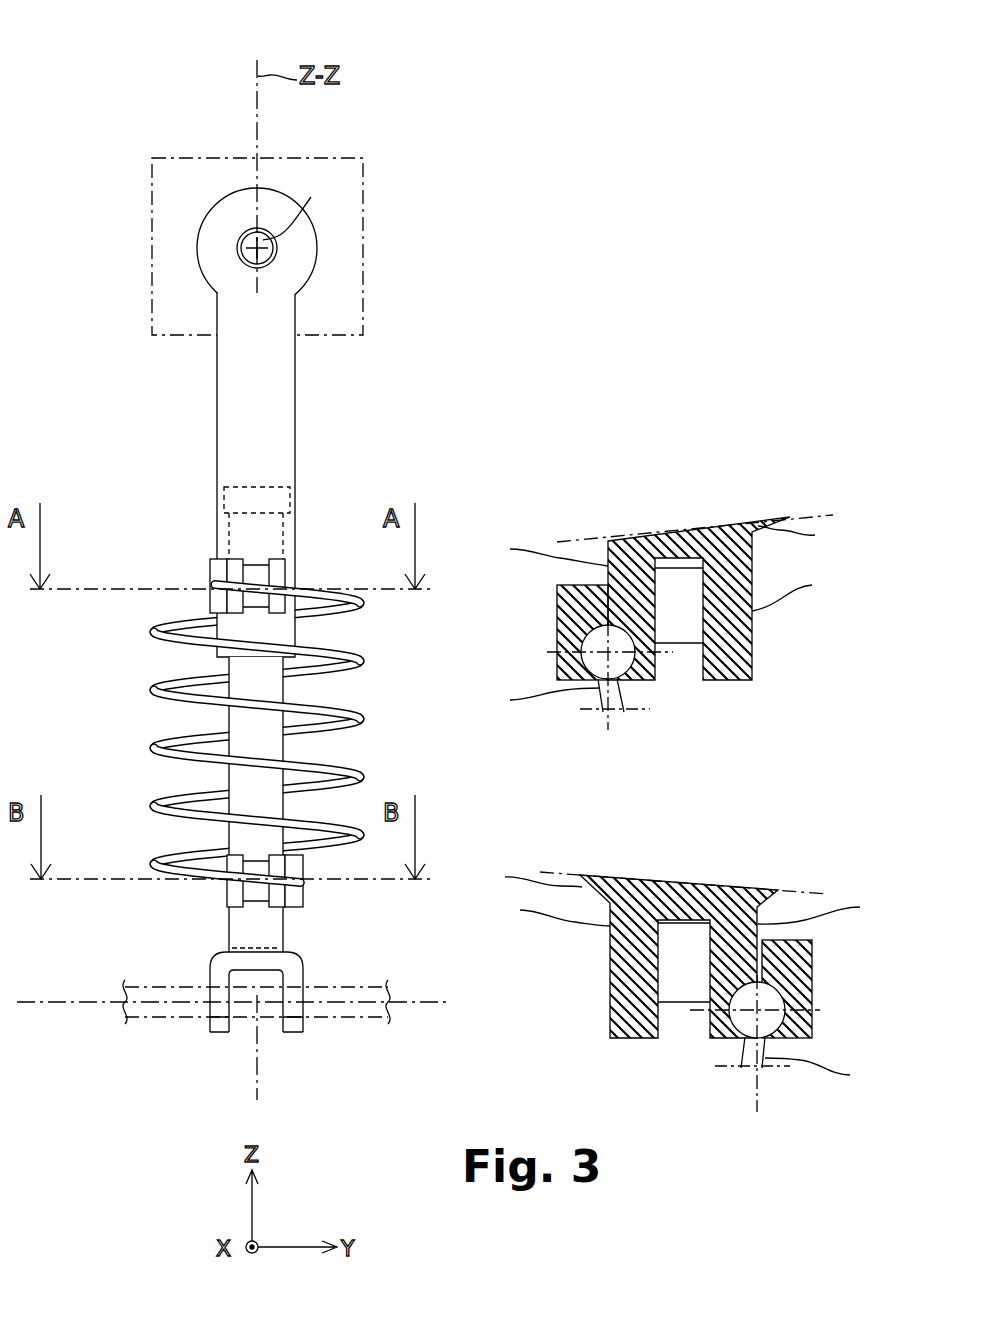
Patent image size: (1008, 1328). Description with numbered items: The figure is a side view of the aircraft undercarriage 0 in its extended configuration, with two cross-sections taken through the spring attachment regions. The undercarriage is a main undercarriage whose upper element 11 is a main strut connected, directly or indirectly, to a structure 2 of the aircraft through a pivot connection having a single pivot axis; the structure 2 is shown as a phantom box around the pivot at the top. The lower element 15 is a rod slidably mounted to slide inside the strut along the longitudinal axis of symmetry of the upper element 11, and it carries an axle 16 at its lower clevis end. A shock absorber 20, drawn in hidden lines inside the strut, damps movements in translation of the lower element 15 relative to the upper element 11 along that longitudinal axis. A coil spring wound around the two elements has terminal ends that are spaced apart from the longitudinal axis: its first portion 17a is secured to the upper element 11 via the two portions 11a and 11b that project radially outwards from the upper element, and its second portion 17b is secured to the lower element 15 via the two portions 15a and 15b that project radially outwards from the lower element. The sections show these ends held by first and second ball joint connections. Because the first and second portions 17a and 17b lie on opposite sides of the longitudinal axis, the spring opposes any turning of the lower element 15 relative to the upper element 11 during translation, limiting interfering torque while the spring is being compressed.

The aircraft undercarriage 0 is at (144, 90).
The structure 2 is at (364, 236).
The upper element 11 is at (217, 402).
The portion of the upper element 11a is at (236, 562).
The portion of the upper element 11b is at (278, 568).
The lower element 15 is at (237, 777).
The portion of the lower element 15a is at (229, 897).
The portion of the lower element 15b is at (278, 864).
The axle 16 is at (358, 1020).
The first portion of the spring 17a is at (213, 586).
The second portion of the spring 17b is at (302, 884).
The shock absorber 20 is at (229, 540).